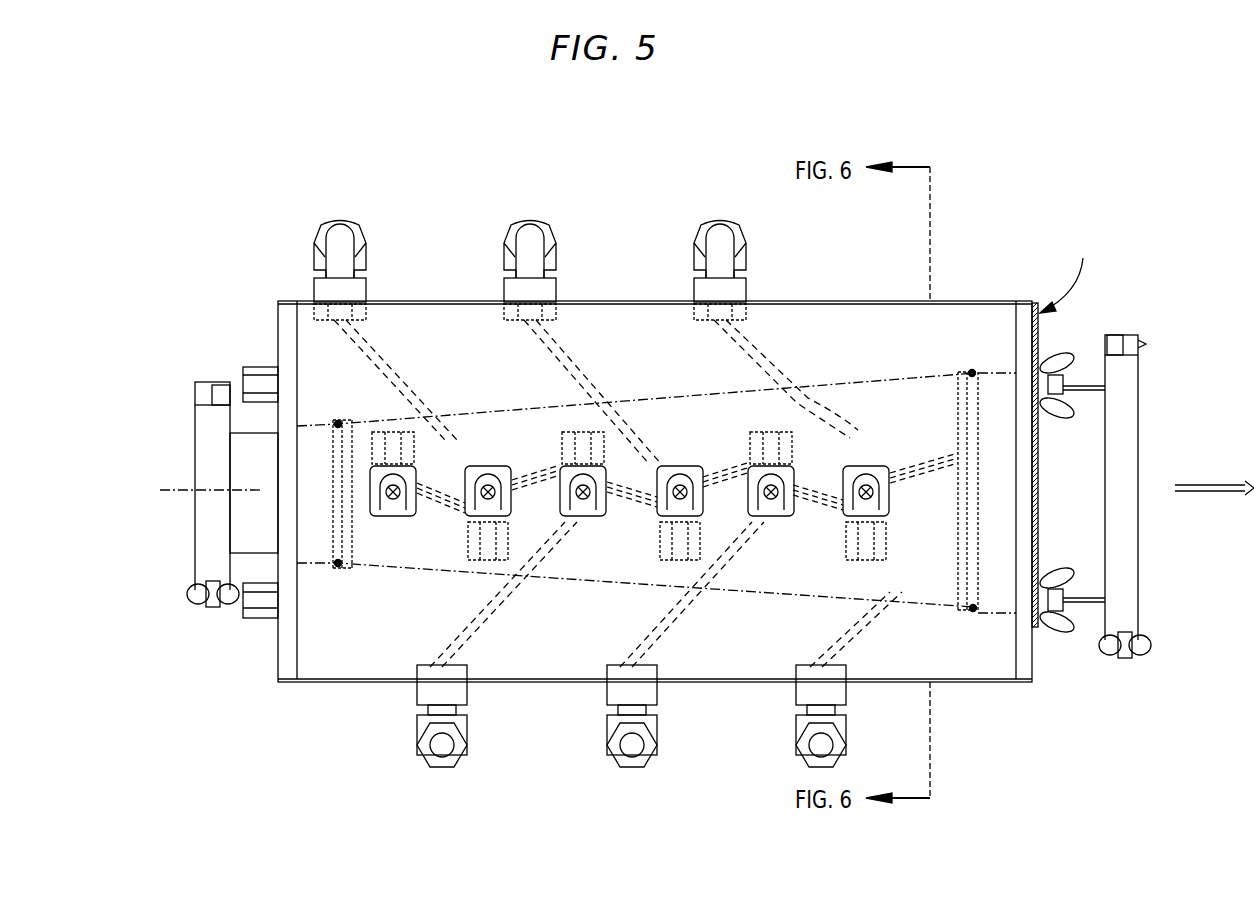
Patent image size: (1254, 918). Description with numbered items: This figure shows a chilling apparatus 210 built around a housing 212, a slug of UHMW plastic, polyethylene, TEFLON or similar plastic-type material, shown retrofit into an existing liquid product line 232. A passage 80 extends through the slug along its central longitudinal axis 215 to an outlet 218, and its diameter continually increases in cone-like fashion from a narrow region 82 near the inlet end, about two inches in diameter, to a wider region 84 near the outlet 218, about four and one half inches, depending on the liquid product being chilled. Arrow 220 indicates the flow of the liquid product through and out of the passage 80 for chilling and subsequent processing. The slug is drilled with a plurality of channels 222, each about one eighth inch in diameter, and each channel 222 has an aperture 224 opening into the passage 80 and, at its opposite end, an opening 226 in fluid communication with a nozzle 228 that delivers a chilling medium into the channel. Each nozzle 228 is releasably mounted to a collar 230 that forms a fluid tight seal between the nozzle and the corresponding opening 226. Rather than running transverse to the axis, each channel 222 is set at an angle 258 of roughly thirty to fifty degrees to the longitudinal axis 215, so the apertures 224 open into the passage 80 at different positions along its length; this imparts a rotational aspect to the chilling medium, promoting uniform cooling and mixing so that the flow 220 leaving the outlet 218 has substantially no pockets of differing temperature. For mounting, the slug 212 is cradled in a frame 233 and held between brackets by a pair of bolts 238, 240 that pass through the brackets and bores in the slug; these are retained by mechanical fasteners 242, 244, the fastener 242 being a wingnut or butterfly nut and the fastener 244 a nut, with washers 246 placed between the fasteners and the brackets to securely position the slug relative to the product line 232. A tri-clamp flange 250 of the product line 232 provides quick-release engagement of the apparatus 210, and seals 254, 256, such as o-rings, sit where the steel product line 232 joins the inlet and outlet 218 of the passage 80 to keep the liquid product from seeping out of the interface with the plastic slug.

The apparatus 210 is at (420, 165).
The housing 212 is at (462, 300).
The central longitudinal axis 215 is at (165, 490).
The outlet 218 is at (950, 620).
The flow 220 is at (1210, 495).
The channels 222 is at (580, 350).
The aperture 224 is at (474, 392).
The opening 226 is at (355, 333).
The nozzle 228 is at (320, 232).
The collar 230 is at (368, 288).
The existing liquid product line 232 is at (240, 476).
The frame 233 is at (1070, 270).
The bolt 238 is at (1082, 384).
The bolt 240 is at (200, 383).
The mechanical fastener 242 is at (1066, 415).
The mechanical fastener 244 is at (240, 366).
The washers 246 is at (270, 366).
The tri-clamp flange 250 is at (1130, 338).
The seal 254 is at (342, 570).
The seal 256 is at (972, 370).
The angle 258 is at (418, 415).
The passage 80 is at (690, 415).
The region 82 is at (360, 405).
The region 84 is at (917, 388).